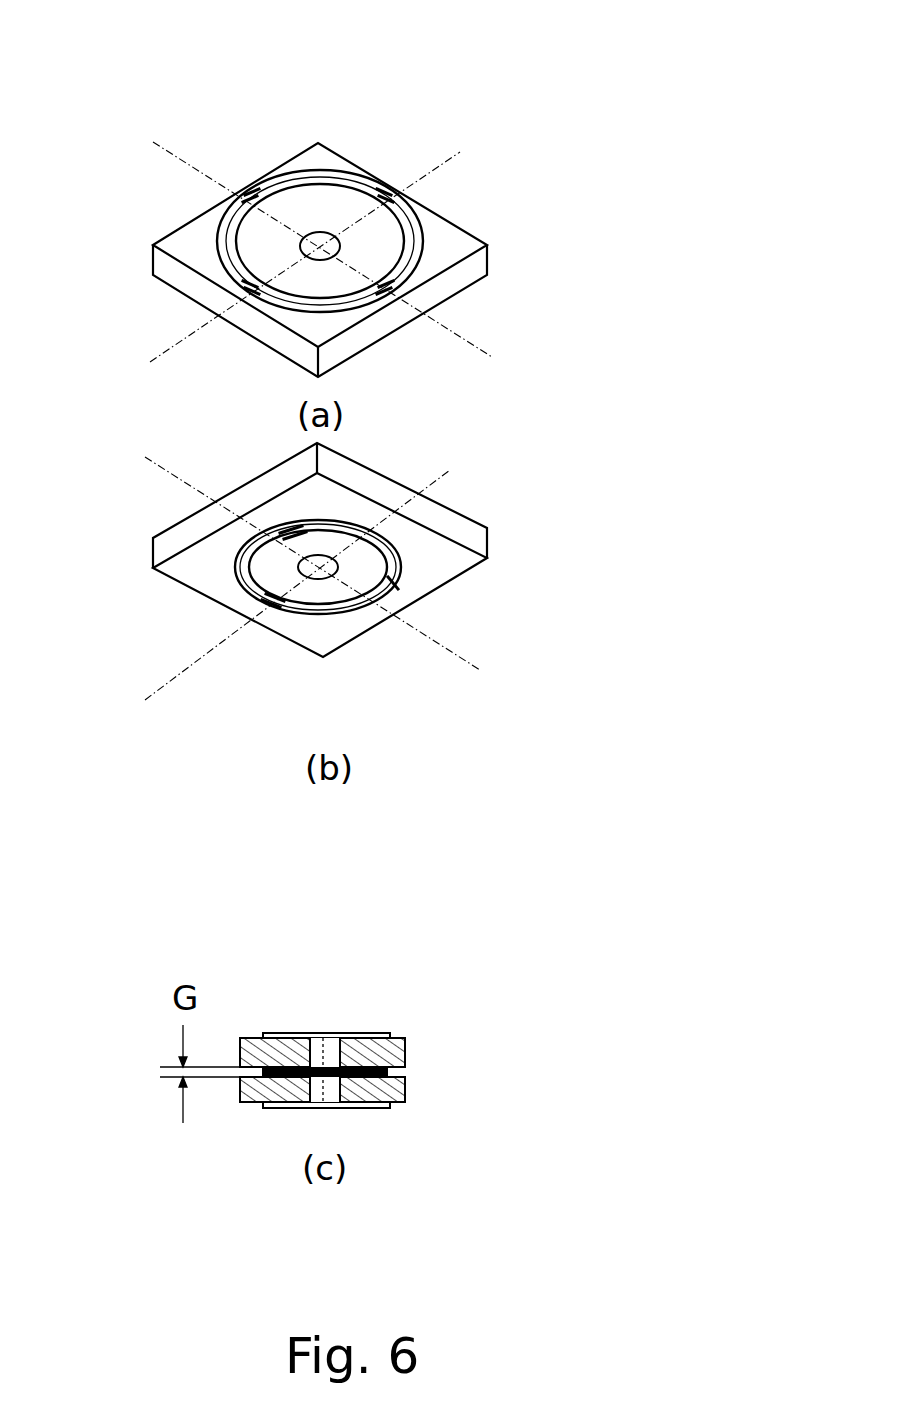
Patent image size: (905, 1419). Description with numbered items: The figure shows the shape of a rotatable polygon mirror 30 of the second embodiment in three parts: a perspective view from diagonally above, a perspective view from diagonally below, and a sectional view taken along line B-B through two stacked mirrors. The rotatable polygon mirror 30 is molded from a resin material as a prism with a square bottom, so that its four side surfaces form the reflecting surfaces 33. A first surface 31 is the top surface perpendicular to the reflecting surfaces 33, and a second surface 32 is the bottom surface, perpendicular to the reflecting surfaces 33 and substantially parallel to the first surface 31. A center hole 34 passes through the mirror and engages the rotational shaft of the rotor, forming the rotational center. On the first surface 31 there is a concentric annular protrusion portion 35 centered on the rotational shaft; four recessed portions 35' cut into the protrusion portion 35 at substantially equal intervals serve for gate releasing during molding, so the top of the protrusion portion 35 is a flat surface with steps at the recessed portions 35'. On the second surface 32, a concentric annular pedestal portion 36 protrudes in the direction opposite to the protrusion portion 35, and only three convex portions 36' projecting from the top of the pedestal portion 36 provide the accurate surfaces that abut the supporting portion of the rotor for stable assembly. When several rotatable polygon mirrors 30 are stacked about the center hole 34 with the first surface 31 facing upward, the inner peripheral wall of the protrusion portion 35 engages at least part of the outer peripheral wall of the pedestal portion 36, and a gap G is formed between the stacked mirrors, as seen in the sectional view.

The rotatable polygon mirror 30 is at (496, 100).
The first surface 31 is at (427, 250).
The second surface 32 is at (435, 568).
The reflecting surface 33 is at (440, 305).
The center hole 34 is at (316, 235).
The protrusion portion 35 is at (247, 602).
The recessed portions 35' is at (300, 571).
The pedestal portion 36 is at (385, 759).
The convex portions 36' is at (325, 806).